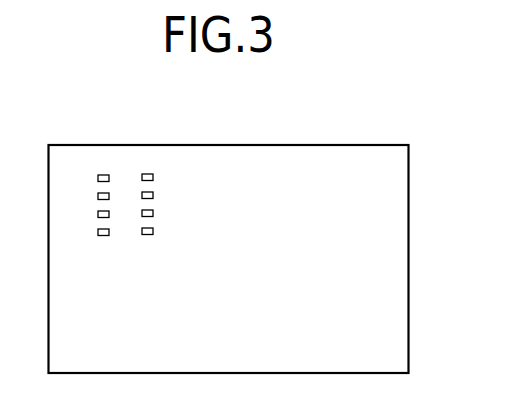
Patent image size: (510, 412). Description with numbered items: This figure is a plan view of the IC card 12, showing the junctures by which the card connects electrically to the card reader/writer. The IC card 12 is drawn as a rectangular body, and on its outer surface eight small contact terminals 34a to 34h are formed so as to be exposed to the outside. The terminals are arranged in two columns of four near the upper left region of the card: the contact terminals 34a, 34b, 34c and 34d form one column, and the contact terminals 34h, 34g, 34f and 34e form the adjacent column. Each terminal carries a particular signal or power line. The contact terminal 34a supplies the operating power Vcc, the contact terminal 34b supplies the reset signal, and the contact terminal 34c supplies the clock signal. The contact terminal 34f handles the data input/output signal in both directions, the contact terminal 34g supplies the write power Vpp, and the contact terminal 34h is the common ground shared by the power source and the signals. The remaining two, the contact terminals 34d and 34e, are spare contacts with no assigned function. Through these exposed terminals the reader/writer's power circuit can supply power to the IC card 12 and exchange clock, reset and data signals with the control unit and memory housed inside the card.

The IC card 12 is at (409, 217).
The contact terminal 34a is at (98, 178).
The contact terminal 34b is at (98, 196).
The contact terminal 34c is at (98, 214).
The contact terminal 34d is at (98, 232).
The contact terminal 34e is at (153, 231).
The contact terminal 34f is at (153, 214).
The contact terminal 34g is at (153, 196).
The contact terminal 34h is at (153, 178).